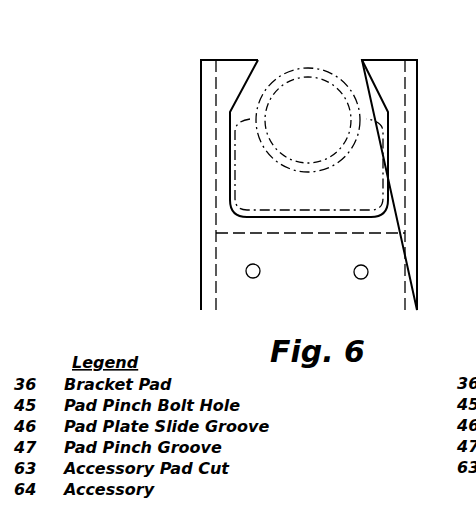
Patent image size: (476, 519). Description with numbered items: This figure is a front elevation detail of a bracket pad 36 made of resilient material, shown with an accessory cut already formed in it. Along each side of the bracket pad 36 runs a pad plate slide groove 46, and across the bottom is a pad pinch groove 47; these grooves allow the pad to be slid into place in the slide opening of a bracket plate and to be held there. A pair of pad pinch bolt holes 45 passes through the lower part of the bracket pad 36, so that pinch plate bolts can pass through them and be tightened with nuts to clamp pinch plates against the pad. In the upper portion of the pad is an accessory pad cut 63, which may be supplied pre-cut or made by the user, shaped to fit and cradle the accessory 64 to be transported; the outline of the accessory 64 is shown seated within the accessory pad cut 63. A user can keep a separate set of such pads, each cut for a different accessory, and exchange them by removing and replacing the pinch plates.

The bracket pad 36 is at (387, 70).
The pad pinch bolt hole 45 is at (251, 264).
The pad plate slide groove 46 is at (208, 151).
The pad pinch groove 47 is at (272, 290).
The accessory pad cut 63 is at (242, 100).
The accessory 64 is at (365, 124).